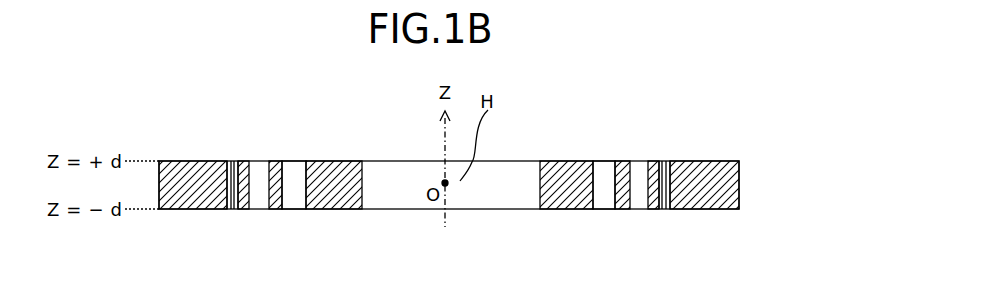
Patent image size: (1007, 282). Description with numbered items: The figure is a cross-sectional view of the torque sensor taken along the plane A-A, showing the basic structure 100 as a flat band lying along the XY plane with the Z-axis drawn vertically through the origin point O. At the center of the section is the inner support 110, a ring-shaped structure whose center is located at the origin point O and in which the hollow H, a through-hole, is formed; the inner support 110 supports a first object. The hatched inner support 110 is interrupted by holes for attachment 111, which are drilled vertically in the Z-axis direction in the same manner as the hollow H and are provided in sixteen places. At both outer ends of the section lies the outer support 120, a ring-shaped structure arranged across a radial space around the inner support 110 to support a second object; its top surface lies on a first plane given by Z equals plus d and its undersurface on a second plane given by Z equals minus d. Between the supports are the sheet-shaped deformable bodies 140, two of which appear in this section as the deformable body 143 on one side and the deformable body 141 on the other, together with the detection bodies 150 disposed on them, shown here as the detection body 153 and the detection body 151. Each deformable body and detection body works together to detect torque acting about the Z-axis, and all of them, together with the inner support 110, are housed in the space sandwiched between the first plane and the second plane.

The basic structure 100 is at (484, 181).
The inner support 110 is at (357, 160).
The holes for attachment 111 is at (298, 210).
The outer support 120 is at (190, 161).
The deformable bodies 140 is at (471, 151).
The deformable body 141 is at (627, 160).
The deformable body 143 is at (274, 160).
The detection bodies 150 is at (446, 215).
The detection body 151 is at (667, 210).
The detection body 153 is at (228, 210).